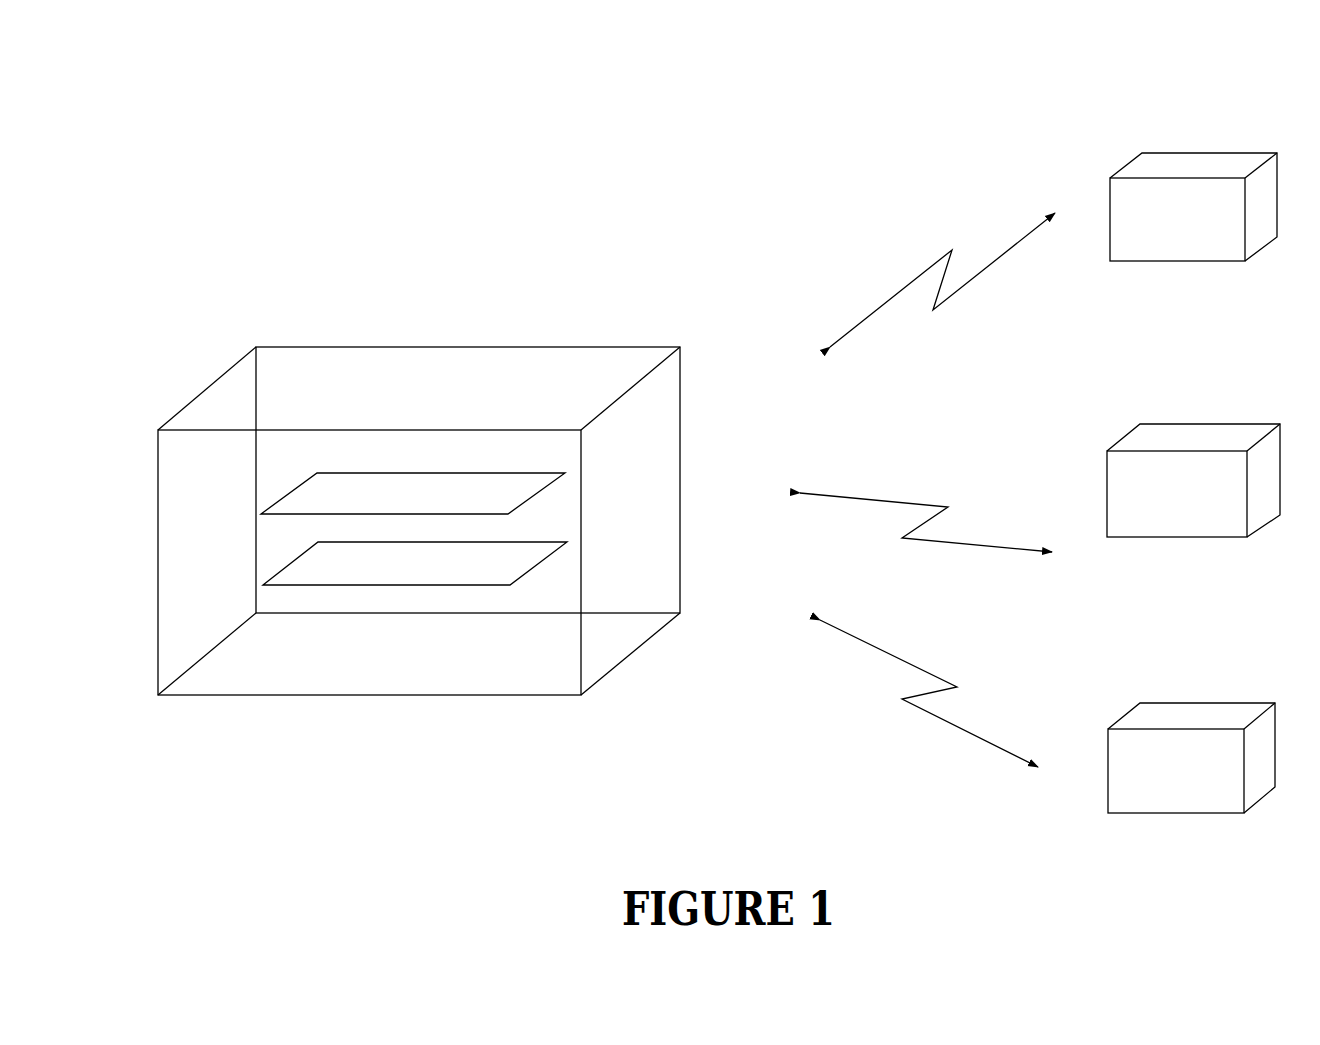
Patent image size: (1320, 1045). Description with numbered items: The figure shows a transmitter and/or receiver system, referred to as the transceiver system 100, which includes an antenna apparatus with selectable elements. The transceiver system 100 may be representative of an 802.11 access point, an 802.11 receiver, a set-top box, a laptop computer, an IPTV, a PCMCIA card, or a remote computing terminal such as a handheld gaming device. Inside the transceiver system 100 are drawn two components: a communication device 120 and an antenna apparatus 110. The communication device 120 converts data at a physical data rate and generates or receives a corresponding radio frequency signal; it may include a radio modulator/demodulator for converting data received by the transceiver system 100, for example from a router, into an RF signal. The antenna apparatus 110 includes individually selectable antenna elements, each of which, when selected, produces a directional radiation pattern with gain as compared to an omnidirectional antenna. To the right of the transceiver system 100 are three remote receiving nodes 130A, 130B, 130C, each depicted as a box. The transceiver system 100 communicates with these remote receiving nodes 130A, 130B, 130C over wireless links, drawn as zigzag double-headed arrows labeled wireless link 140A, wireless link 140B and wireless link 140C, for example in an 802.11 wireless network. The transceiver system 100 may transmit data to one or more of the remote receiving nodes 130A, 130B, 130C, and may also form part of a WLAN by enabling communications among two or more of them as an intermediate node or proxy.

The transceiver system 100 is at (419, 517).
The antenna apparatus 110 is at (513, 507).
The communication device 120 is at (513, 582).
The remote receiving node 130A is at (1210, 190).
The remote receiving node 130B is at (1209, 464).
The remote receiving node 130C is at (1209, 742).
The wireless link 140A is at (923, 272).
The wireless link 140B is at (918, 503).
The wireless link 140C is at (917, 708).